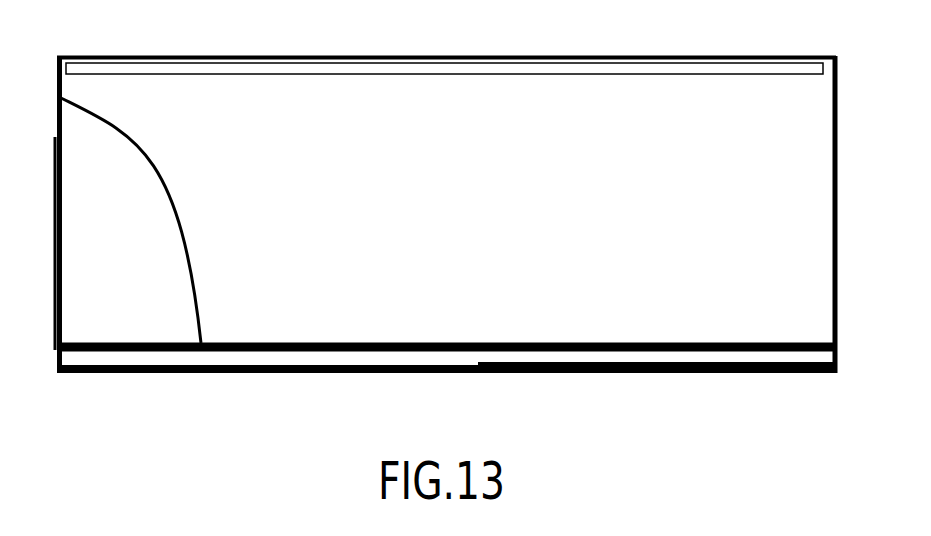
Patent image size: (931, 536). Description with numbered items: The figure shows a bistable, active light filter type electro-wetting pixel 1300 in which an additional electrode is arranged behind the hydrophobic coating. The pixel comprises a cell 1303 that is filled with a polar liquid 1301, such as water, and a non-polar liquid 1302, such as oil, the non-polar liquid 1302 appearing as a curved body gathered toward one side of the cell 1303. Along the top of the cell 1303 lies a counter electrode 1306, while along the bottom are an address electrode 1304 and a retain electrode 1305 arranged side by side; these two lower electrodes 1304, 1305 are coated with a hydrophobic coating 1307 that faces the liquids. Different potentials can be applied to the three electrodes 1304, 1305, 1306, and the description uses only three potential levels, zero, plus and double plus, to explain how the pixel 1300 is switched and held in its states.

The bistable electro-wetting pixel 1300 is at (445, 219).
The polar liquid 1301 is at (447, 201).
The non-polar liquid 1302 is at (89, 202).
The cell 1303 is at (833, 293).
The address electrode 1304 is at (352, 373).
The retain electrode 1305 is at (710, 373).
The counter electrode 1306 is at (480, 75).
The hydrophobic coating 1307 is at (510, 342).